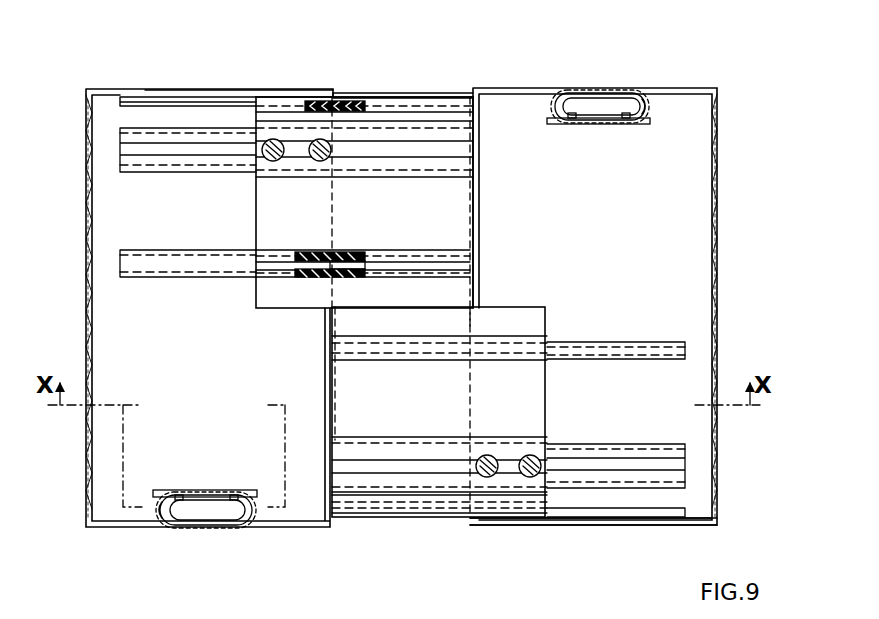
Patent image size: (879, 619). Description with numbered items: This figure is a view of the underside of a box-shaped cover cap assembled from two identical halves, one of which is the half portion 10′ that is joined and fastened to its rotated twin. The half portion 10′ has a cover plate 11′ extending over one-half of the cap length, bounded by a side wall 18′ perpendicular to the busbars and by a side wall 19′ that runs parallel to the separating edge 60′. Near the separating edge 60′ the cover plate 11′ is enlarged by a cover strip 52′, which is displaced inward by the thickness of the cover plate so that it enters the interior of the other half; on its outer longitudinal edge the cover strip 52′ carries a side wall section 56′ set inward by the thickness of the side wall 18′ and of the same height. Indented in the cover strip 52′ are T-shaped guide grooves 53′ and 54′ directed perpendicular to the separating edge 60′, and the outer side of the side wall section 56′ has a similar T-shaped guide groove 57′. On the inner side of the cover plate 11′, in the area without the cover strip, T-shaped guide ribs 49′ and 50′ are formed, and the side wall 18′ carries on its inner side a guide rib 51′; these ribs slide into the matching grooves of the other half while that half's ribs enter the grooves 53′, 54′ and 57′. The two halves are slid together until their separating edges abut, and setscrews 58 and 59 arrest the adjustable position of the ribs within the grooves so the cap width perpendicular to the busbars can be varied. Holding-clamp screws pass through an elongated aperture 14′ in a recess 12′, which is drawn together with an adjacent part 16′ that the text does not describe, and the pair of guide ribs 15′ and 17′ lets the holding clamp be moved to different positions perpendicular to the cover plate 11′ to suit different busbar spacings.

The half portion of cover cap 10′ is at (127, 546).
The cover plate 11′ is at (95, 320).
The recess 12′ is at (250, 521).
The elongated aperture 14′ is at (205, 506).
The guide rib 15′ is at (172, 526).
The mounting plate 16′ is at (205, 489).
The guide rib 17′ is at (233, 494).
The side wall 18′ is at (212, 91).
The side wall 19′ is at (88, 198).
The guide rib 49′ is at (196, 255).
The guide rib 50′ is at (153, 168).
The guide rib 51′ is at (160, 103).
The cover strip 52′ is at (396, 452).
The guide groove 53′ is at (470, 352).
The guide groove 54′ is at (445, 460).
The side wall section 56′ is at (441, 514).
The guide groove 57′ is at (462, 514).
The setscrew 58 is at (316, 162).
The setscrew 59 is at (528, 455).
The separating edge 60′ is at (333, 298).